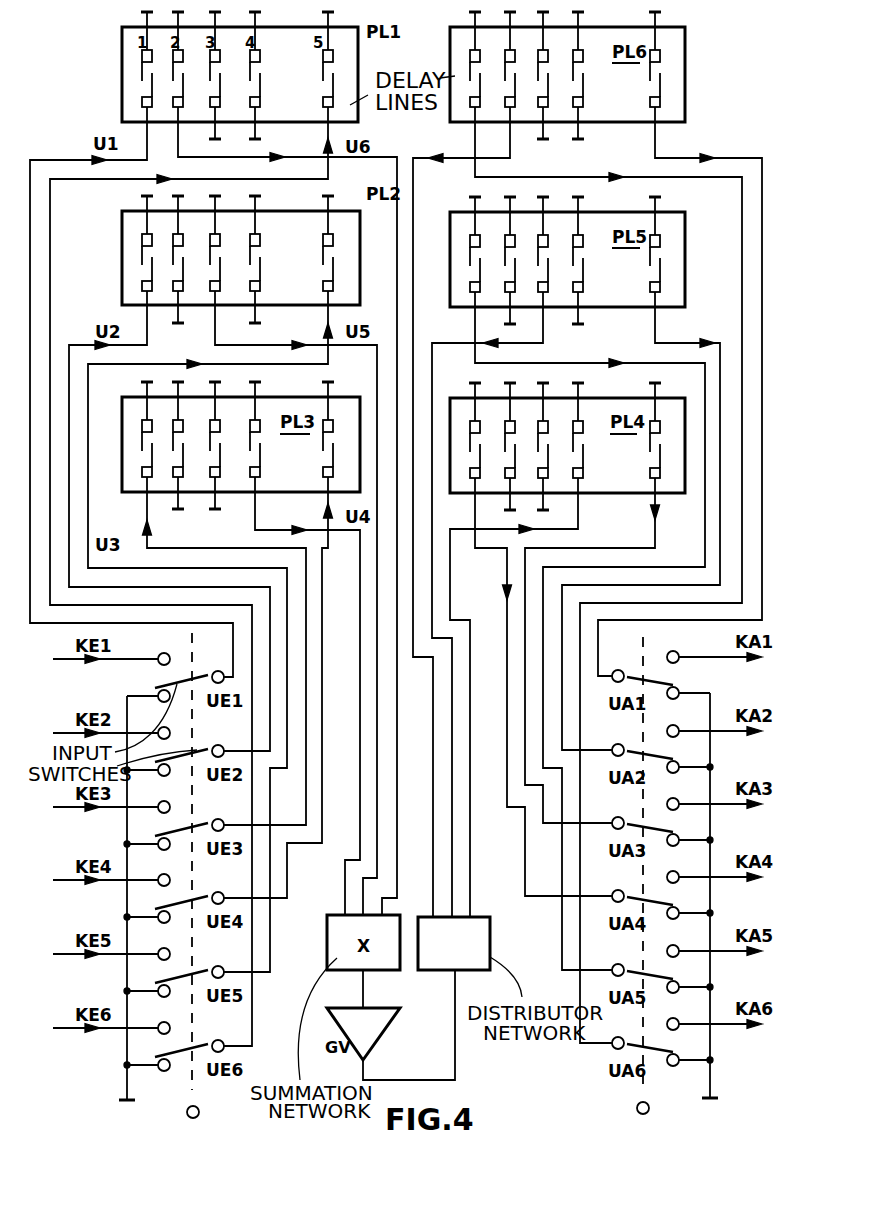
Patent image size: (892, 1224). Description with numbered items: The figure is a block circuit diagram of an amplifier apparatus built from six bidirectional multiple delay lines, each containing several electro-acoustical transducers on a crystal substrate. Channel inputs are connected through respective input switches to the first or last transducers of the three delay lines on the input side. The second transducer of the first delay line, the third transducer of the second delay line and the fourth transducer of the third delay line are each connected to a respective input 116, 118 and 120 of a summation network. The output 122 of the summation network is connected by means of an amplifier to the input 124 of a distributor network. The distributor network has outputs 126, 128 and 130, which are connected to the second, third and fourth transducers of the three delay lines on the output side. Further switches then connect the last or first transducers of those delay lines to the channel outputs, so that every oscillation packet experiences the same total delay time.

The input of summation network 116 is at (397, 887).
The input of summation network 118 is at (363, 912).
The input of summation network 120 is at (345, 907).
The output of summation network 122 is at (362, 982).
The input of distributor network 124 is at (457, 978).
The output of distributor network 126 is at (433, 910).
The output of distributor network 128 is at (453, 888).
The output of distributor network 130 is at (472, 867).